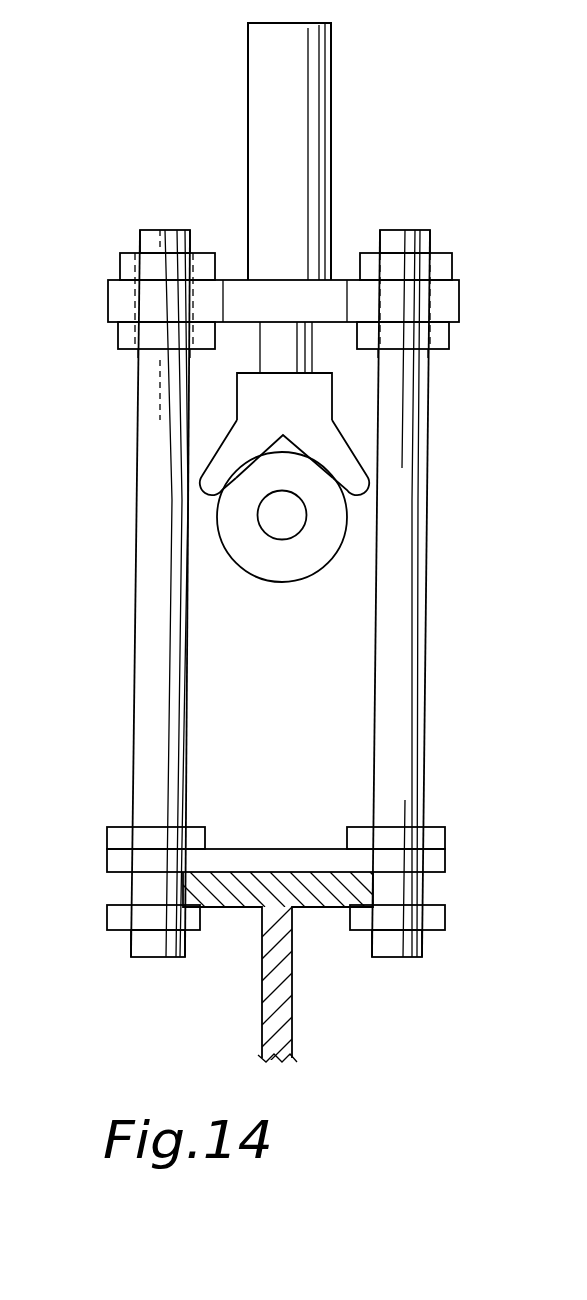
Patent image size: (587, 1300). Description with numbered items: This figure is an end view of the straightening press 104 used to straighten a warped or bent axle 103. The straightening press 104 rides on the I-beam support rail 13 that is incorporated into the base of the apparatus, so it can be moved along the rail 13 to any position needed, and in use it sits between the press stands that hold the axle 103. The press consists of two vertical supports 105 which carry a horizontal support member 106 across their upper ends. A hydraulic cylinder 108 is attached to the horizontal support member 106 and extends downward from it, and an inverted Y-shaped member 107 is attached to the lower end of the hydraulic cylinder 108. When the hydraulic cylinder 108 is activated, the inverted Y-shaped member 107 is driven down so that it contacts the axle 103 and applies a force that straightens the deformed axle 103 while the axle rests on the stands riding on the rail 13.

The rail 13 is at (332, 908).
The axle 103 is at (283, 540).
The straightening press 104 is at (424, 685).
The vertical supports 105 is at (138, 452).
The horizontal support member 106 is at (453, 307).
The inverted Y-shaped member 107 is at (366, 483).
The hydraulic cylinder 108 is at (328, 118).